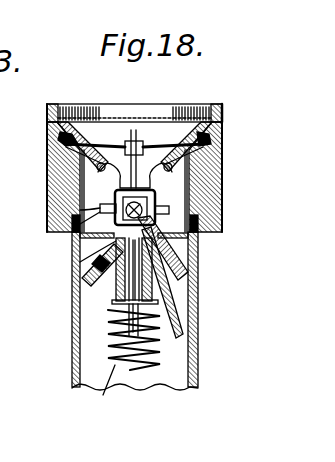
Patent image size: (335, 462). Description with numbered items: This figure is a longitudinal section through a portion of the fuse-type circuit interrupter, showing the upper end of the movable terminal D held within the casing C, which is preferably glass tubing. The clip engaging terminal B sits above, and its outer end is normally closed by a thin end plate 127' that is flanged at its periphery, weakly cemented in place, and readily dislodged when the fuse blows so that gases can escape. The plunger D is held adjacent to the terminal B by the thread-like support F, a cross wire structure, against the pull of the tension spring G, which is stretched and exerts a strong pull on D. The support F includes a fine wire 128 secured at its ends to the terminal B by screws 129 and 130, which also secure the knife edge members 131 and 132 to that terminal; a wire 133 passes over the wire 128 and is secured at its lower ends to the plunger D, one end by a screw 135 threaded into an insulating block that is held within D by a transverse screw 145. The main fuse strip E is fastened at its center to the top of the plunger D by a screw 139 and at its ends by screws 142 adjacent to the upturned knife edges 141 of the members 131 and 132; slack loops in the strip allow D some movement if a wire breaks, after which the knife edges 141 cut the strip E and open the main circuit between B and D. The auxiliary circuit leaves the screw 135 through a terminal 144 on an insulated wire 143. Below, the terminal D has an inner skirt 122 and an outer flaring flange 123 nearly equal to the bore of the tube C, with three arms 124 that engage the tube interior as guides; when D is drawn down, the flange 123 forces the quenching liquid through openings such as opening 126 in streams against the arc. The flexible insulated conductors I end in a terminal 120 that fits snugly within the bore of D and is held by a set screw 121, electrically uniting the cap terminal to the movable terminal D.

The end plate 127' is at (134, 98).
The screw 130 is at (72, 105).
The fine wire 128 is at (190, 104).
The screw 129 is at (220, 110).
The screw 139 is at (62, 180).
The clip engaging terminal B is at (212, 190).
The terminal 144 is at (200, 210).
The upturned knife edge 141 is at (60, 158).
The knife edge member 131 is at (214, 132).
The knife edge member 132 is at (57, 132).
The screw 142 is at (93, 126).
The main fuse strip E is at (112, 148).
The thread-like support F is at (141, 150).
The wire 133 is at (143, 181).
The movable terminal D is at (78, 240).
The transverse screw 145 is at (72, 233).
The screw 135 is at (100, 207).
The casing C is at (74, 371).
The arms 124 is at (175, 240).
The outer flaring flange 123 is at (190, 266).
The insulated wire 143 is at (185, 305).
The opening 126 is at (95, 273).
The set screw 121 is at (80, 265).
The terminal 120 is at (98, 297).
The inner skirt 122 is at (100, 312).
The flexible insulated conductors I is at (78, 346).
The tension spring G is at (104, 390).